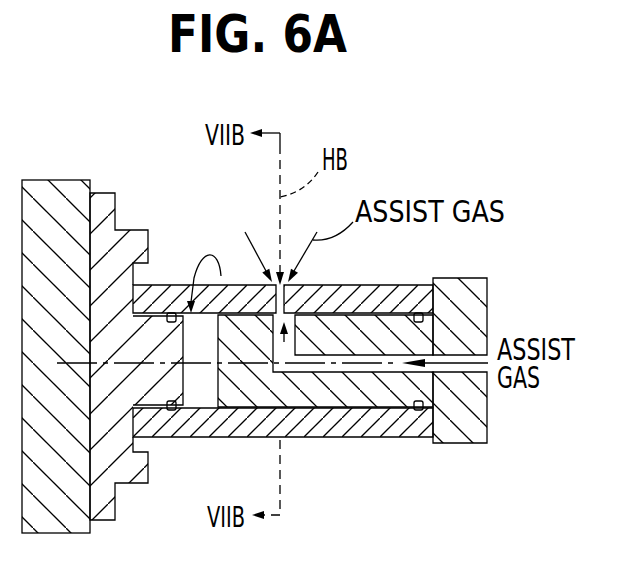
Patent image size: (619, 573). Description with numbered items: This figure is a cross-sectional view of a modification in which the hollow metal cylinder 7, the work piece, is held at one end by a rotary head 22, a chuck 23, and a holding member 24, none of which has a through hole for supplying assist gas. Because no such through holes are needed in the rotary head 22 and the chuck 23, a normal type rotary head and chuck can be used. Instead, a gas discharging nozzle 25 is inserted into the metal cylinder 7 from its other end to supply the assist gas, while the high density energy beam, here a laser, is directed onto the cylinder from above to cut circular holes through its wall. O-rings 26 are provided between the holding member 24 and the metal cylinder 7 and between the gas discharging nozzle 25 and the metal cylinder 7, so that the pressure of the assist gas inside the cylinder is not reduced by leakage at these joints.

The metal cylinder 7 is at (290, 437).
The rotary head 22 is at (52, 188).
The chuck 23 is at (105, 205).
The holding member 24 is at (115, 440).
The gas discharging nozzle 25 is at (387, 333).
The O-ring 26 is at (173, 412).